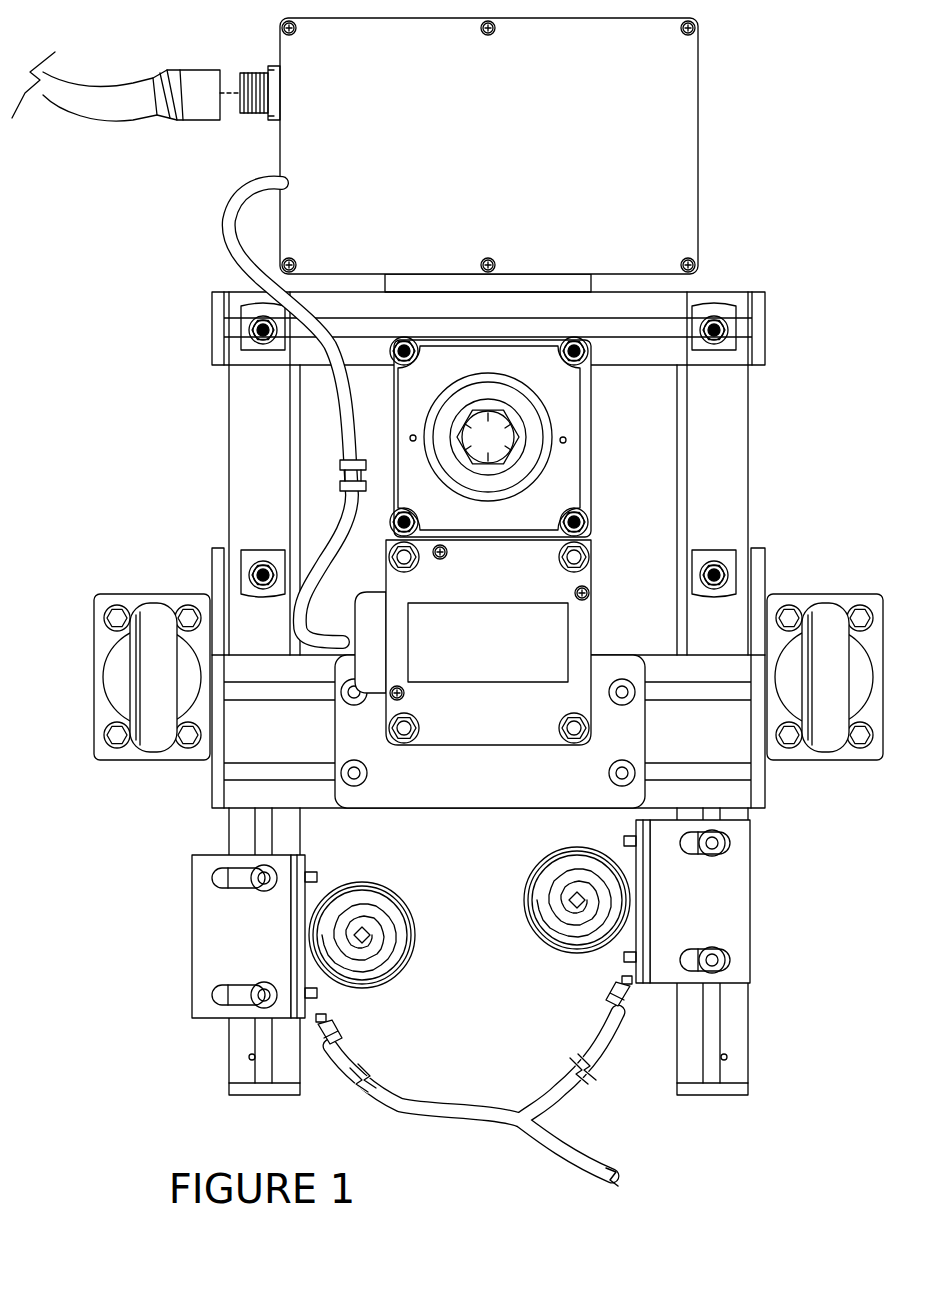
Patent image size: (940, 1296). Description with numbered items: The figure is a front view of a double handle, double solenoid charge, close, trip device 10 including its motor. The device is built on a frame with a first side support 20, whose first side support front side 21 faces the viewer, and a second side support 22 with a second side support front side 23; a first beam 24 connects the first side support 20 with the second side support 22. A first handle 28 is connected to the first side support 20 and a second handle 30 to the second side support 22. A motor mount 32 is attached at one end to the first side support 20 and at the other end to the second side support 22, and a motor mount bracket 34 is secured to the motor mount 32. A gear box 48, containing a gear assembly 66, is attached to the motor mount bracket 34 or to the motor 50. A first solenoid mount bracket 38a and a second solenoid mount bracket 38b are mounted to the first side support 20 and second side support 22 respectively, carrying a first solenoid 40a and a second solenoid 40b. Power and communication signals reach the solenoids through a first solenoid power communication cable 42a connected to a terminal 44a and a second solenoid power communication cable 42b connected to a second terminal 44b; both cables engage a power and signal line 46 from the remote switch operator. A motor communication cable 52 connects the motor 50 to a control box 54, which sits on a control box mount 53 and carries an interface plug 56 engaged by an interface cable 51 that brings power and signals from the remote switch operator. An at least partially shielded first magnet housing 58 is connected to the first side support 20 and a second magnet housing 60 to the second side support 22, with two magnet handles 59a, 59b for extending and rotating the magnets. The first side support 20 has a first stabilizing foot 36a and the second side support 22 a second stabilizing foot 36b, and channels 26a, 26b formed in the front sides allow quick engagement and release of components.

The charge, close, trip device 10 is at (806, 228).
The first side support 20 is at (240, 1033).
The first side support front side 21 is at (290, 1072).
The second side support 22 is at (748, 1033).
The second side support front side 23 is at (690, 1072).
The first beam 24 is at (605, 300).
The channel 26a is at (262, 1057).
The channel 26b is at (715, 1057).
The first handle 28 is at (250, 432).
The second handle 30 is at (725, 432).
The motor mount 32 is at (248, 745).
The motor mount bracket 34 is at (498, 782).
The first stabilizing foot 36a is at (265, 1096).
The second stabilizing foot 36b is at (715, 1096).
The first solenoid mount bracket 38a is at (213, 938).
The second solenoid mount bracket 38b is at (733, 900).
The first solenoid 40a is at (382, 893).
The second solenoid 40b is at (557, 948).
The first solenoid power communication cable 42a is at (380, 1092).
The second solenoid power communication cable 42b is at (560, 1062).
The terminal 44a is at (327, 1022).
The second terminal 44b is at (620, 982).
The power and signal line 46 is at (562, 1155).
The gear box 48 is at (567, 412).
The motor 50 is at (582, 632).
The interface cable 51 is at (88, 100).
The motor communication cable 52 is at (228, 210).
The control box mount 53 is at (412, 283).
The control box 54 is at (700, 146).
The interface plug 56 is at (262, 72).
The first magnet housing 58 is at (155, 762).
The magnet handle 59a is at (163, 628).
The magnet handle 59b is at (833, 628).
The second magnet housing 60 is at (823, 762).
The gear assembly 66 is at (510, 440).